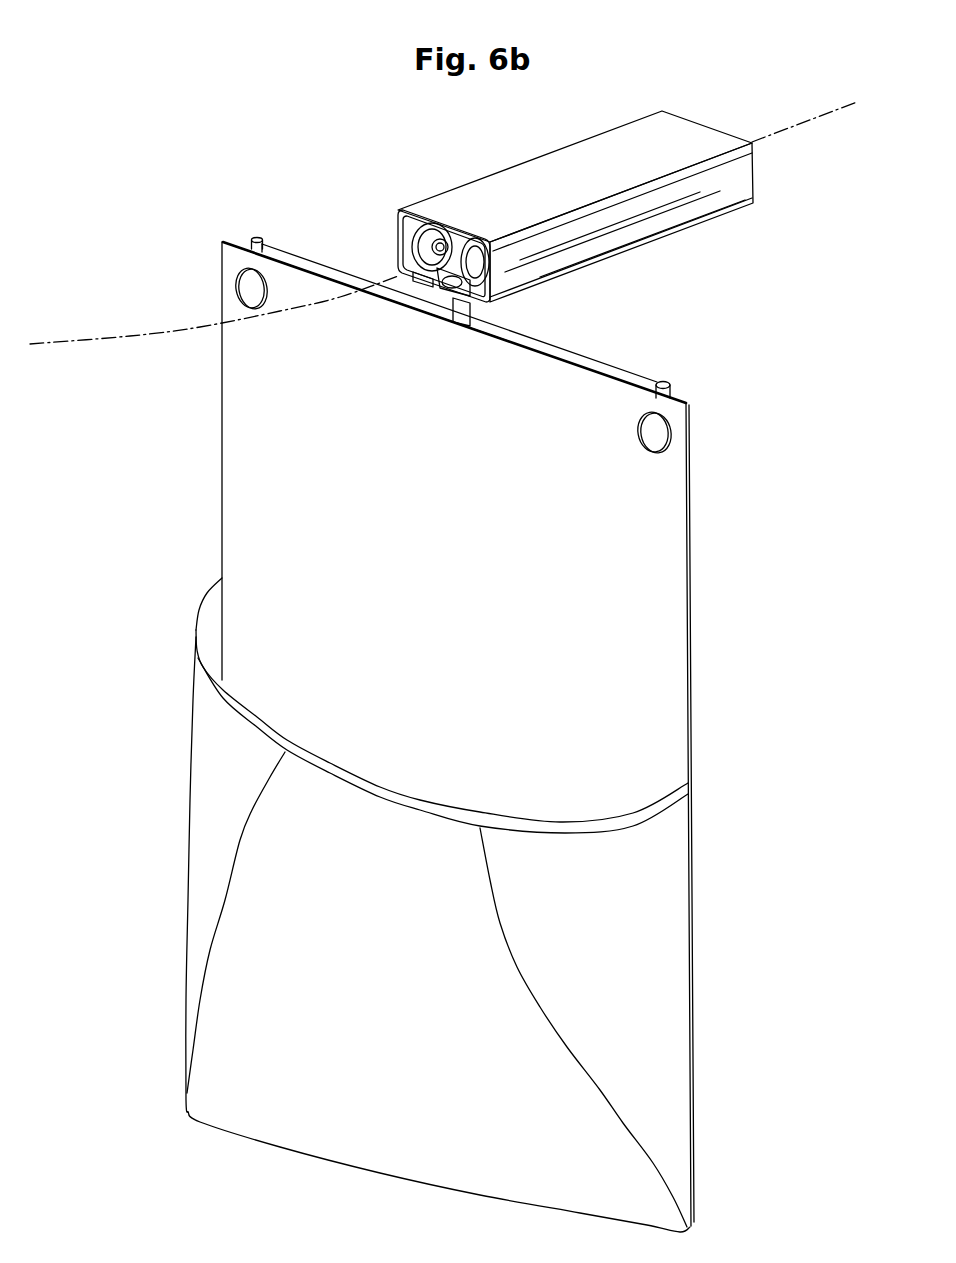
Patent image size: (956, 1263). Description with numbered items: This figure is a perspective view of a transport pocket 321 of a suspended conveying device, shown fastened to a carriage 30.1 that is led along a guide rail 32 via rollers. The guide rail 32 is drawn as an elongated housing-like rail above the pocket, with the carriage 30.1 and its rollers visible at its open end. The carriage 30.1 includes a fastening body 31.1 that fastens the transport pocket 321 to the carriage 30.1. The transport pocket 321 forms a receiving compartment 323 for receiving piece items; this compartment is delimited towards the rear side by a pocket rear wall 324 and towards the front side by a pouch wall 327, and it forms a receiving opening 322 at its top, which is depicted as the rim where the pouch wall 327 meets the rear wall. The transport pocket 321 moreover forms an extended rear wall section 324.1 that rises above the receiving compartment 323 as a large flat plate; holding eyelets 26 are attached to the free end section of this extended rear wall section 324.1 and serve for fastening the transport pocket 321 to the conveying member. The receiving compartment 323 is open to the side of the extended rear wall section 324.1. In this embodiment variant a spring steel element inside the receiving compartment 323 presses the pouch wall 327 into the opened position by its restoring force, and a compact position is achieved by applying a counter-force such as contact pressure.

The guide rail 32 is at (665, 215).
The carriage 30.1 is at (440, 247).
The fastening body 31.1 is at (463, 309).
The pocket rear wall 324 is at (683, 617).
The extended rear wall section 324.1 is at (281, 545).
The holding eyelet 26 is at (242, 278).
The receiving opening 322 is at (548, 753).
The transport pocket 321 is at (688, 745).
The pouch wall 327 is at (413, 917).
The receiving compartment 323 is at (657, 1005).